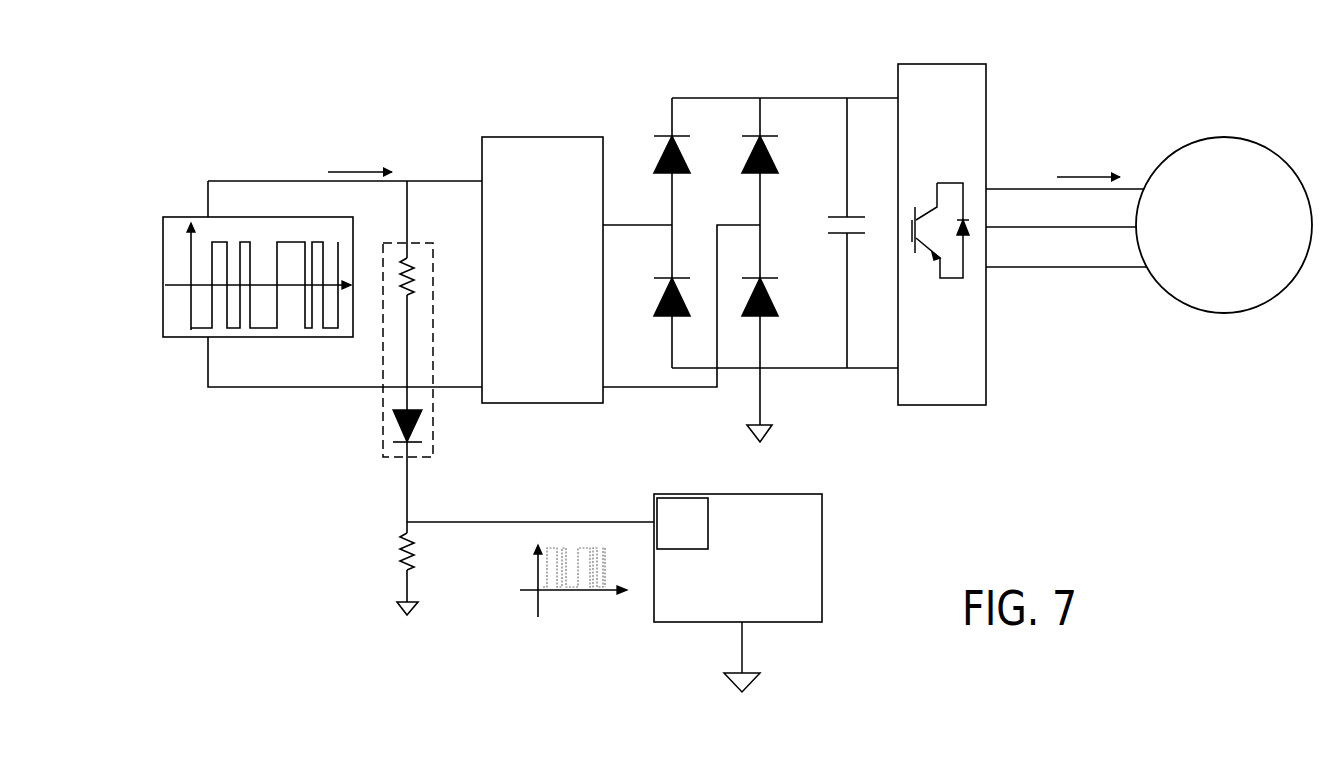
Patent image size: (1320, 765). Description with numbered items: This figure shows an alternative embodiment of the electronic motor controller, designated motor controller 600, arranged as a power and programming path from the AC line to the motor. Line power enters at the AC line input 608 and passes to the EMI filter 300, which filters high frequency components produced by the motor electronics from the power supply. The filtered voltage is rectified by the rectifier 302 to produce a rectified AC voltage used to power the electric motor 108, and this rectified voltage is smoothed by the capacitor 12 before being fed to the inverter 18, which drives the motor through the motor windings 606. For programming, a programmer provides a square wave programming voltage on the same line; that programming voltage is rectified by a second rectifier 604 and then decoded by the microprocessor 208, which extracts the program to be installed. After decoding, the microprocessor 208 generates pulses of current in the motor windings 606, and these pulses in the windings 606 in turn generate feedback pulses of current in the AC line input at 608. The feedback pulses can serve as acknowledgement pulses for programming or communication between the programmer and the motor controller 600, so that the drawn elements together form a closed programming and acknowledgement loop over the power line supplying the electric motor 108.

The motor controller 600 is at (355, 53).
The AC line input 608 is at (298, 180).
The second rectifier 604 is at (383, 431).
The electromagnetic interference (EMI) filter 300 is at (515, 136).
The rectifier 302 is at (712, 79).
The electric motor 12 is at (840, 216).
The inverter 18 is at (937, 64).
The motor windings 606 is at (1050, 188).
The electric fan motor 108 is at (1224, 137).
The microprocessor 208 is at (735, 494).